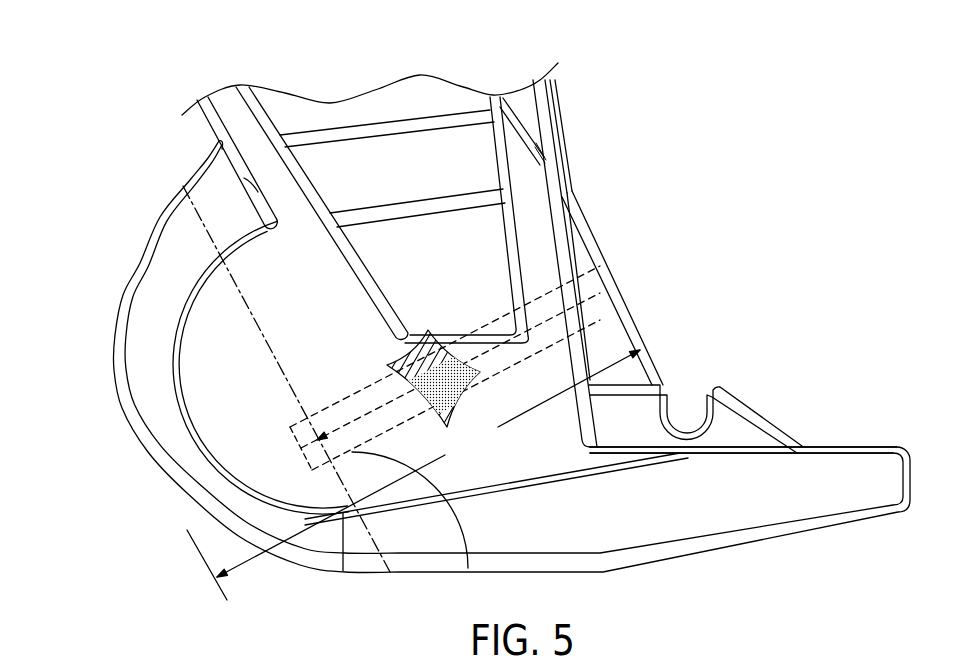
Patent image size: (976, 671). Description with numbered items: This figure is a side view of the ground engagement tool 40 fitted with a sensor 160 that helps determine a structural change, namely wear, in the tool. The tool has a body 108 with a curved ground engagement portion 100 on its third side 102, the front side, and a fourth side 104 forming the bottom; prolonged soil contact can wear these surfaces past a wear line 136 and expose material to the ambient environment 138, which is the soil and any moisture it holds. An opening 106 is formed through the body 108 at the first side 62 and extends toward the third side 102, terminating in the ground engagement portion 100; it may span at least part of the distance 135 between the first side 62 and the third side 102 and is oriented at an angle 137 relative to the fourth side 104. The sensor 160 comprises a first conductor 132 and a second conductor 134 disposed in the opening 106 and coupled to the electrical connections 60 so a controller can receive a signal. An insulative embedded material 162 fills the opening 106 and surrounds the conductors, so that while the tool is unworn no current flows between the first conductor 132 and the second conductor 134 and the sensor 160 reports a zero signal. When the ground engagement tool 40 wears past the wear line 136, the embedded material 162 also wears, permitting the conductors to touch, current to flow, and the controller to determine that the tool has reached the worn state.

The ground engagement tool 40 is at (135, 114).
The electrical connections 60 is at (566, 153).
The first side 62 is at (664, 230).
The ground engagement portion 100 is at (190, 475).
The third side 102 is at (480, 357).
The fourth side 104 is at (404, 606).
The opening 106 is at (594, 307).
The body 108 is at (583, 433).
The first conductor 132 is at (348, 418).
The second conductor 134 is at (373, 427).
The distance 135 is at (413, 475).
The wear line 136 is at (205, 228).
The angle 137 is at (462, 527).
The ambient environment 138 is at (97, 461).
The sensor 160 is at (288, 420).
The embedded material 162 is at (453, 330).